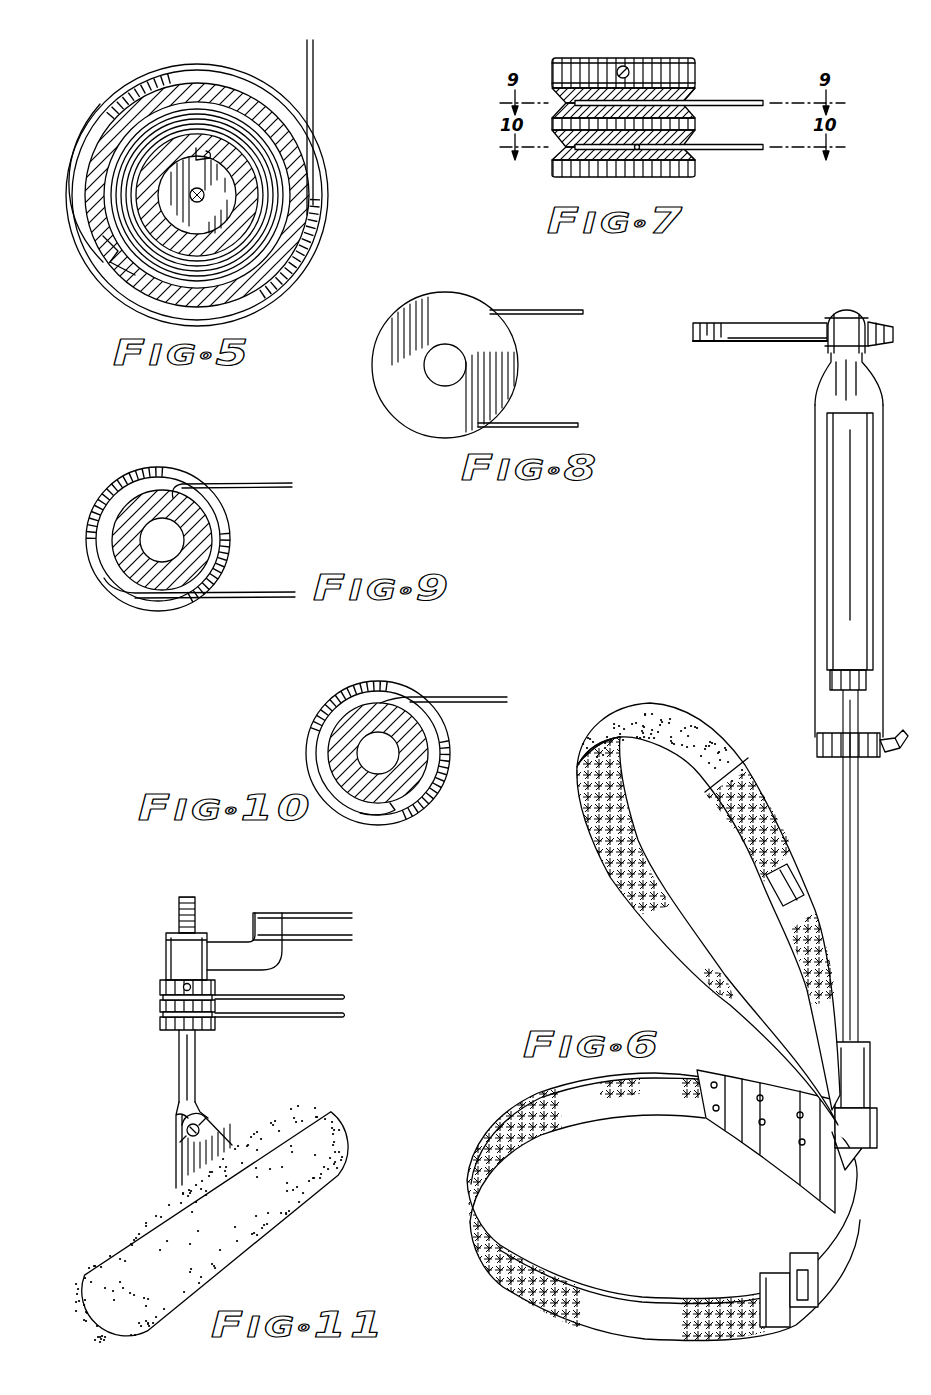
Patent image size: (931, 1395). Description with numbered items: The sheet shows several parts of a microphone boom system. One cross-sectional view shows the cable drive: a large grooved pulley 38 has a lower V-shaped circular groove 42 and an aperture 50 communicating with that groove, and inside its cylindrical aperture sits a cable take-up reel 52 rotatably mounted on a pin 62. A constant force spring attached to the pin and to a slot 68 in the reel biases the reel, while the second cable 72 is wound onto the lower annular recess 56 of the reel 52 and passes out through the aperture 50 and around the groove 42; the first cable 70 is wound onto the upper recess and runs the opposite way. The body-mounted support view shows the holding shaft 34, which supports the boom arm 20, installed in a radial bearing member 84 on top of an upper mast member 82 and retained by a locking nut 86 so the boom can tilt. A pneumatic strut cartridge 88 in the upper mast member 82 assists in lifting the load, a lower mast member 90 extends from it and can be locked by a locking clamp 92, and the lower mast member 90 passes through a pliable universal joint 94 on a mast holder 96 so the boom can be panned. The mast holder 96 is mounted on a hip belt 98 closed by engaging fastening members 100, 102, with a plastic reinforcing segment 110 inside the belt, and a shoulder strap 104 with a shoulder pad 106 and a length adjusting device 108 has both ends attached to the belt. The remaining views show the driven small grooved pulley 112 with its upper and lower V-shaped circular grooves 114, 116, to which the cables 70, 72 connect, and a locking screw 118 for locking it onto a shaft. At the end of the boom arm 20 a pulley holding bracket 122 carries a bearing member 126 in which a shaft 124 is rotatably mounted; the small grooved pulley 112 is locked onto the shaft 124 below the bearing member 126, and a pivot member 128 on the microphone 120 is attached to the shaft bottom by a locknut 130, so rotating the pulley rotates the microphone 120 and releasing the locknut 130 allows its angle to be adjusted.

In FIG. 11, the boom arm 20 is at (340, 913).
In FIG. 6, the holding shaft 34 is at (776, 341).
In FIG. 5, the large grooved pulley 38 is at (157, 88).
In FIG. 5, the V-shaped circular groove 42 is at (71, 171).
In FIG. 5, the aperture 50 is at (110, 268).
In FIG. 5, the cable take-up reel 52 is at (246, 210).
In FIG. 5, the annular recess 56 is at (120, 137).
In FIG. 5, the pin 62 is at (208, 204).
In FIG. 5, the slot 68 is at (210, 152).
In FIG. 7, the first cable 70 is at (725, 101).
In FIG. 8, the first cable 70 is at (553, 423).
In FIG. 9, the first cable 70 is at (243, 598).
In FIG. 11, the first cable 70 is at (340, 995).
In FIG. 5, the second cable 72 is at (313, 97).
In FIG. 7, the second cable 72 is at (722, 145).
In FIG. 8, the second cable 72 is at (549, 310).
In FIG. 9, the second cable 72 is at (245, 483).
In FIG. 10, the second cable 72 is at (470, 697).
In FIG. 11, the second cable 72 is at (340, 1018).
In FIG. 6, the upper mast member 82 is at (826, 398).
In FIG. 6, the radial bearing member 84 is at (851, 310).
In FIG. 6, the locking nut 86 is at (883, 346).
In FIG. 6, the pneumatic strut cartridge 88 is at (862, 593).
In FIG. 6, the lower mast member 90 is at (858, 916).
In FIG. 6, the locking clamp 92 is at (893, 758).
In FIG. 6, the pliable universal joint 94 is at (870, 1088).
In FIG. 6, the mast holder 96 is at (878, 1130).
In FIG. 6, the hip belt 98 is at (858, 1248).
In FIG. 6, the engaging fastening member 100 is at (783, 1325).
In FIG. 6, the engaging fastening member 102 is at (818, 1298).
In FIG. 6, the shoulder strap 104 is at (665, 900).
In FIG. 6, the shoulder pad 106 is at (716, 730).
In FIG. 6, the length adjusting device 108 is at (793, 870).
In FIG. 6, the plastic reinforcing segment 110 is at (782, 1158).
In FIG. 7, the small grooved pulley 112 is at (552, 72).
In FIG. 8, the small grooved pulley 112 is at (383, 391).
In FIG. 9, the small grooved pulley 112 is at (123, 538).
In FIG. 10, the small grooved pulley 112 is at (335, 746).
In FIG. 11, the small grooved pulley 112 is at (160, 1006).
In FIG. 7, the V-shaped circular groove 114 is at (696, 92).
In FIG. 9, the V-shaped circular groove 114 is at (224, 542).
In FIG. 7, the V-shaped circular groove 116 is at (689, 163).
In FIG. 10, the V-shaped circular groove 116 is at (440, 738).
In FIG. 7, the locking screw 118 is at (624, 67).
In FIG. 11, the microphone 120 is at (282, 1200).
In FIG. 11, the pulley holding bracket 122 is at (278, 950).
In FIG. 11, the shaft 124 is at (180, 1070).
In FIG. 11, the bearing member 126 is at (166, 958).
In FIG. 11, the pivot member 128 is at (177, 1147).
In FIG. 11, the locknut 130 is at (185, 1140).